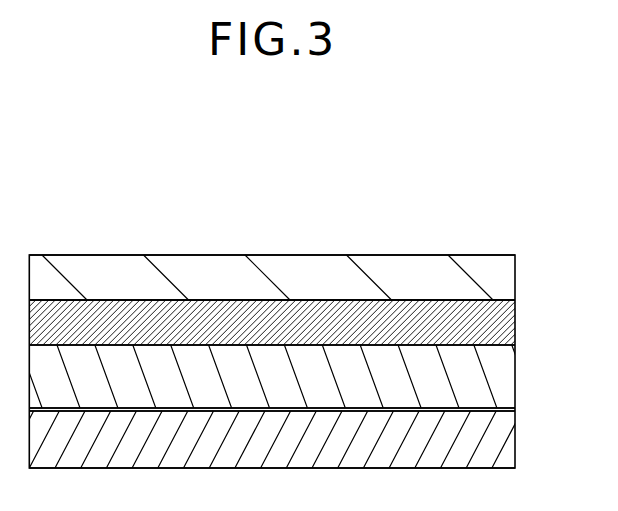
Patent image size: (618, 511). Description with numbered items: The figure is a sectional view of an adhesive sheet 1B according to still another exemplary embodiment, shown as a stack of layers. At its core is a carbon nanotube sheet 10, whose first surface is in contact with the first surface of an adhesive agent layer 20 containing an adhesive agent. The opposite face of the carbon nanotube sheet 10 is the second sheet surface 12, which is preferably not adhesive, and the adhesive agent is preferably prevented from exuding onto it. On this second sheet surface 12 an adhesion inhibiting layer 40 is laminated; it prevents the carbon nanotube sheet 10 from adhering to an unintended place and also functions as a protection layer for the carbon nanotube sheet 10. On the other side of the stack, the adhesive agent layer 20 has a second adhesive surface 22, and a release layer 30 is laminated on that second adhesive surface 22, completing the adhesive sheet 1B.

The adhesive sheet 1B is at (407, 210).
The carbon nanotube sheet 10 is at (507, 322).
The second sheet surface 12 is at (493, 299).
The adhesive agent layer 20 is at (503, 368).
The second adhesive surface 22 is at (483, 422).
The release layer 30 is at (500, 434).
The adhesion inhibiting layer 40 is at (508, 270).